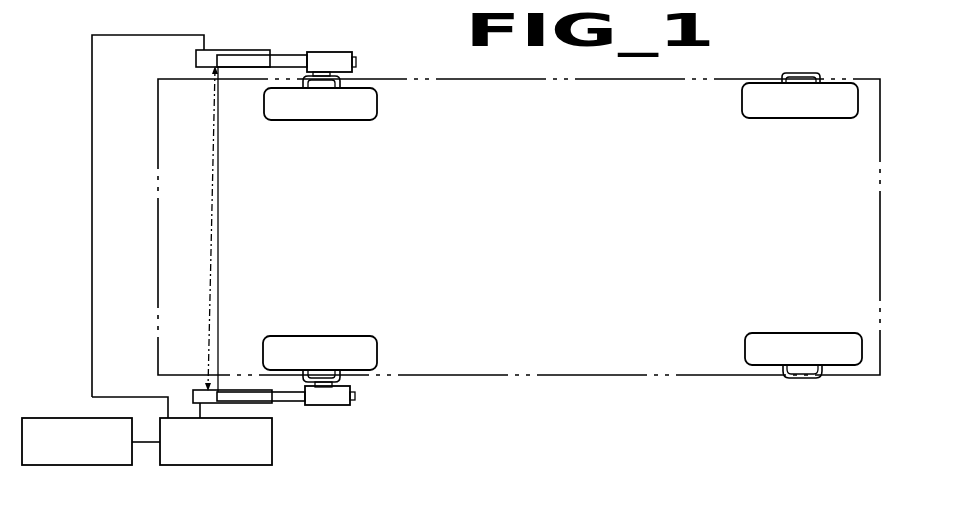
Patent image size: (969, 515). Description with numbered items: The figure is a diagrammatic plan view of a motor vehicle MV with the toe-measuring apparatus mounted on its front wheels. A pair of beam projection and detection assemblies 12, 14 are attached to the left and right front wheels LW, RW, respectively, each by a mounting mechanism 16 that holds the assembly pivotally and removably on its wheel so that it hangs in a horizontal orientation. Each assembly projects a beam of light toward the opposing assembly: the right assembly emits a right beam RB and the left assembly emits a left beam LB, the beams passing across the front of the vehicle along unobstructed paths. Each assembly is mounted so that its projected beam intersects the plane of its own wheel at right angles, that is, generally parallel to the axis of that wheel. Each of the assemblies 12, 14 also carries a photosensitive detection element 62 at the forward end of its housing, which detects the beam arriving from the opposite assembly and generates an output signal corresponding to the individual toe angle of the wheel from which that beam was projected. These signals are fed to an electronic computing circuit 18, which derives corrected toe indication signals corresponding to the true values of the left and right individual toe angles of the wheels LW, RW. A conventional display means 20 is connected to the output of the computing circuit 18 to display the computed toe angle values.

The beam projection and detection assembly 12 is at (237, 358).
The beam projection and detection assembly 14 is at (253, 88).
The mounting mechanism 16 is at (341, 79).
The electronic computing circuit 18 is at (227, 450).
The display means 20 is at (90, 448).
The photosensitive detection element 62 is at (272, 51).
The right beam RB is at (212, 248).
The left beam LB is at (218, 257).
The right front wheel RW is at (379, 107).
The left front wheel LW is at (357, 353).
The motor vehicle MV is at (518, 376).